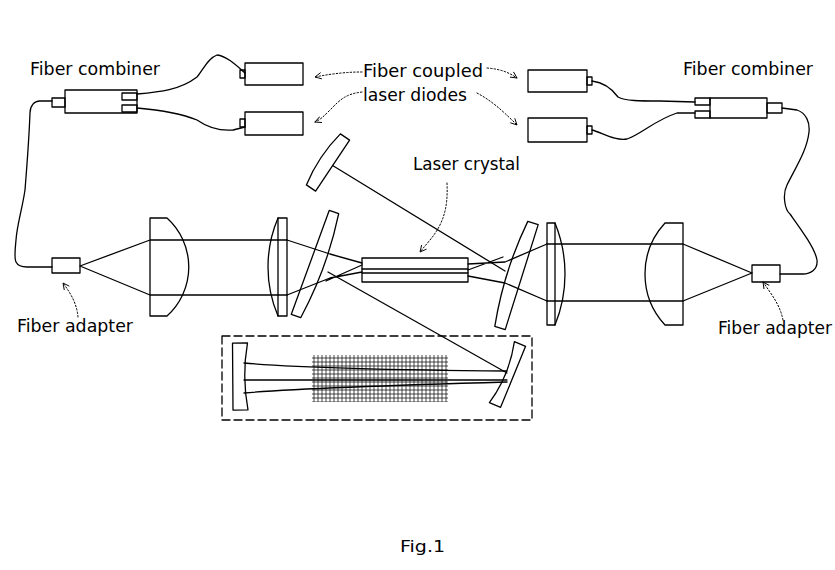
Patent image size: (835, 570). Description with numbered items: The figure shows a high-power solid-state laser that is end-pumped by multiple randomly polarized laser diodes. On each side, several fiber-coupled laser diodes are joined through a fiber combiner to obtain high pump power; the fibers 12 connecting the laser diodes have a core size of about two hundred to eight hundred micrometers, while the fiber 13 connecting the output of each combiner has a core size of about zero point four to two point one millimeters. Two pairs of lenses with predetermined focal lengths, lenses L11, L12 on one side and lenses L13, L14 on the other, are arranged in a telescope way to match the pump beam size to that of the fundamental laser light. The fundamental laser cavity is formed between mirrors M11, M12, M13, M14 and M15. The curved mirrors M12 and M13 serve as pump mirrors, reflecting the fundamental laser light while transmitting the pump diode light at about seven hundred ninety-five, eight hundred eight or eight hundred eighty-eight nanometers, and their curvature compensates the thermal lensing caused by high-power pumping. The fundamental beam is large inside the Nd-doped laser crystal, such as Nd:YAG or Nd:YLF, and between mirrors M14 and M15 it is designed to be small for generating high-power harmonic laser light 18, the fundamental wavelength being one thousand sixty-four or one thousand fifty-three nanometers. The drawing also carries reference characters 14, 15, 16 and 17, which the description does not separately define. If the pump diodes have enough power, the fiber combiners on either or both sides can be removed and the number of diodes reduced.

The fibers connecting the laser diodes 12 is at (213, 106).
The fiber connecting the output of the combiner 13 is at (33, 182).
The laser resonator beam 14 is at (505, 271).
The pump beam 15 is at (610, 277).
The optical module 16 is at (217, 376).
The intracavity laser beam 17 is at (293, 392).
The high-power harmonic laser light 18 is at (378, 402).
The lens L11 is at (163, 255).
The lens L12 is at (273, 255).
The lens L13 is at (562, 263).
The lens L14 is at (665, 263).
The mirror M11 is at (351, 162).
The curved pump mirror M12 is at (511, 263).
The curved pump mirror M13 is at (335, 263).
The mirror M14 is at (523, 373).
The mirror M15 is at (220, 357).